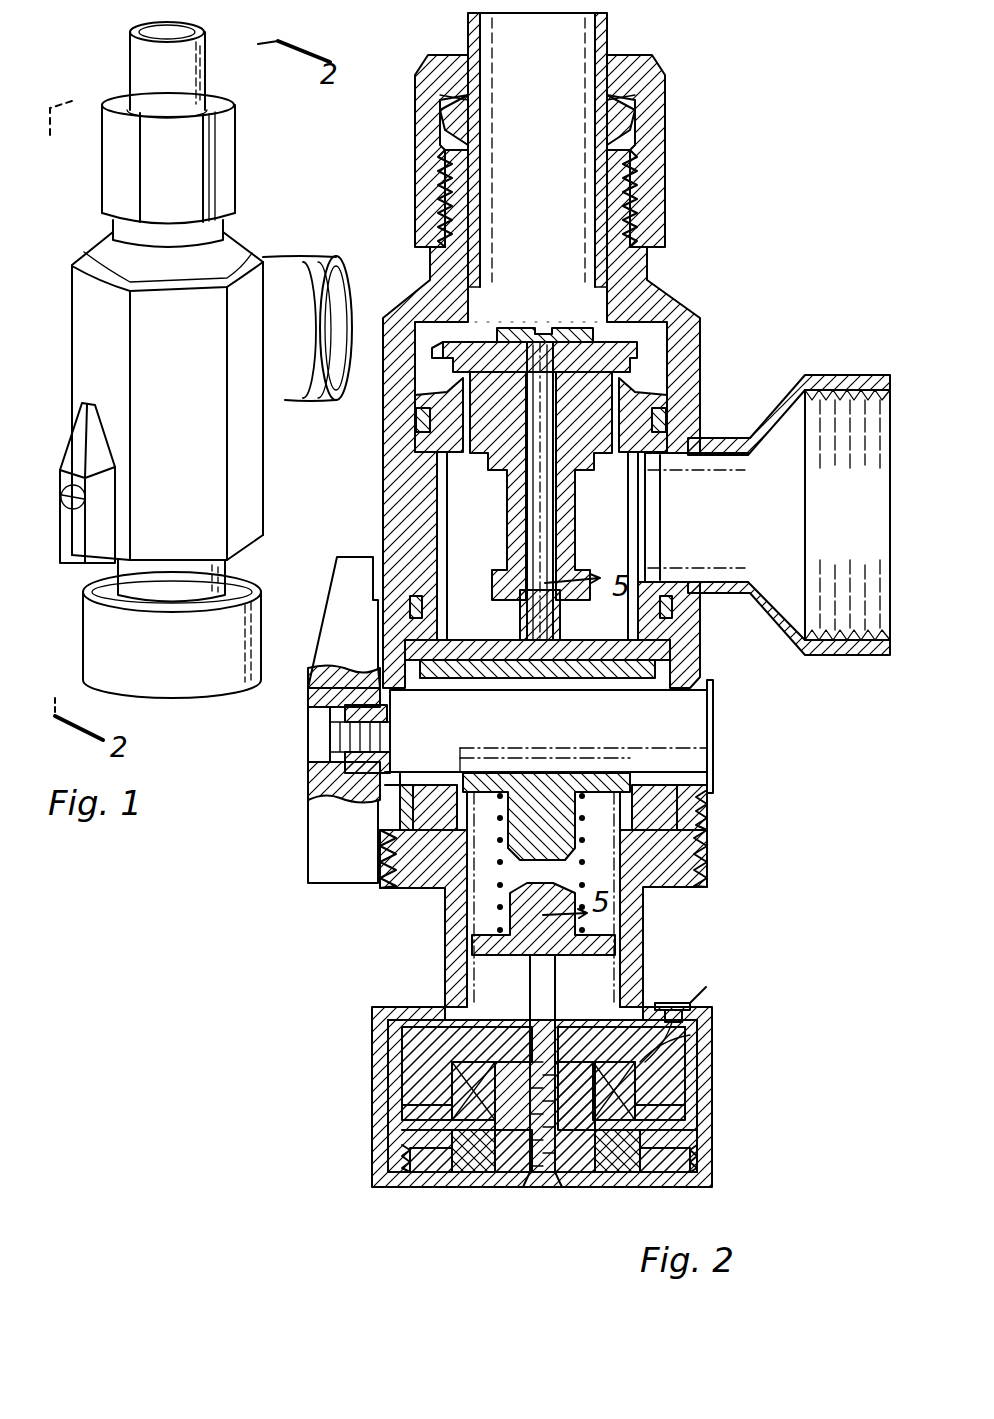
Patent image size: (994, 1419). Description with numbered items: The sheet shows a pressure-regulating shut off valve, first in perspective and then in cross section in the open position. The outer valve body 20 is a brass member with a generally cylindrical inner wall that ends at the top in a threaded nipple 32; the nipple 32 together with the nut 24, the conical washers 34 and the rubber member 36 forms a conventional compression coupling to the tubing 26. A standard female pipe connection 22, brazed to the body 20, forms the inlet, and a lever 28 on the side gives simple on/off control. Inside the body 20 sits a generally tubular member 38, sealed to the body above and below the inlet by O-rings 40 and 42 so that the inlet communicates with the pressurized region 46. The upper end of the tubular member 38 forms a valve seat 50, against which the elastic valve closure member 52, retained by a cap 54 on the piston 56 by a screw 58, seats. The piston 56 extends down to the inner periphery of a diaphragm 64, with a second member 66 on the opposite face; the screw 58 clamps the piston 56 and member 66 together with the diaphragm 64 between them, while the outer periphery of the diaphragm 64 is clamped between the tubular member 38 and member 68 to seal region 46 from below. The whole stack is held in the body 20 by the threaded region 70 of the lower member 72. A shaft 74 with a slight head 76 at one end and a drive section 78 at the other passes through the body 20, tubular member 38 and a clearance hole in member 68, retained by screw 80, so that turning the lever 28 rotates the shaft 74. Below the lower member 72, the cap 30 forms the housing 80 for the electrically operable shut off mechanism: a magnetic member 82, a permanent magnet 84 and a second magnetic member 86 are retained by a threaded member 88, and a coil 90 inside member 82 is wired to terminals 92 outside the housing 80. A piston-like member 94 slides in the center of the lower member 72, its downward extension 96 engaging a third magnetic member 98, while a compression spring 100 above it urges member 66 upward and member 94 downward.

In FIG. 1, the outer valve body 20 is at (78, 297).
In FIG. 2, the outer valve body 20 is at (705, 382).
In FIG. 1, the female pipe connection 22 is at (315, 278).
In FIG. 2, the female pipe connection 22 is at (840, 378).
In FIG. 1, the nut 24 is at (105, 163).
In FIG. 2, the nut 24 is at (666, 128).
In FIG. 1, the tubing 26 is at (135, 48).
In FIG. 2, the tubing 26 is at (610, 35).
In FIG. 1, the lever 28 is at (62, 475).
In FIG. 2, the lever 28 is at (318, 690).
In FIG. 1, the cap 30 is at (185, 695).
In FIG. 2, the cap 30 is at (375, 1140).
In FIG. 2, the threaded nipple 32 is at (640, 190).
In FIG. 2, the conical washers 34 is at (632, 100).
In FIG. 2, the rubber member 36 is at (625, 122).
In FIG. 2, the tubular member 38 is at (415, 466).
In FIG. 2, the O-ring 40 is at (416, 418).
In FIG. 2, the O-ring 42 is at (410, 600).
In FIG. 2, the region 46 is at (640, 520).
In FIG. 2, the valve seat 50 is at (668, 372).
In FIG. 2, the valve closure member 52 is at (485, 342).
In FIG. 2, the cap 54 is at (455, 342).
In FIG. 2, the piston 56 is at (492, 507).
In FIG. 2, the screw 58 is at (565, 328).
In FIG. 2, the diaphragm 64 is at (462, 640).
In FIG. 2, the second member 66 is at (568, 690).
In FIG. 2, the member 68 is at (448, 690).
In FIG. 2, the threaded region 70 is at (415, 885).
In FIG. 2, the lower member 72 is at (450, 966).
In FIG. 2, the shaft 74 is at (680, 748).
In FIG. 2, the head 76 is at (714, 788).
In FIG. 2, the drive section 78 is at (330, 790).
In FIG. 2, the screw / housing 80 is at (308, 735).
In FIG. 2, the magnetic member 82 is at (700, 1048).
In FIG. 2, the permanent magnet 84 is at (690, 1105).
In FIG. 2, the second magnetic member 86 is at (480, 1170).
In FIG. 2, the threaded member 88 is at (422, 1165).
In FIG. 2, the coil 90 is at (455, 1088).
In FIG. 2, the terminals 92 is at (706, 987).
In FIG. 2, the piston-like member 94 is at (612, 950).
In FIG. 2, the extension 96 is at (540, 1005).
In FIG. 2, the third magnetic member 98 is at (575, 1170).
In FIG. 2, the spring 100 is at (700, 842).